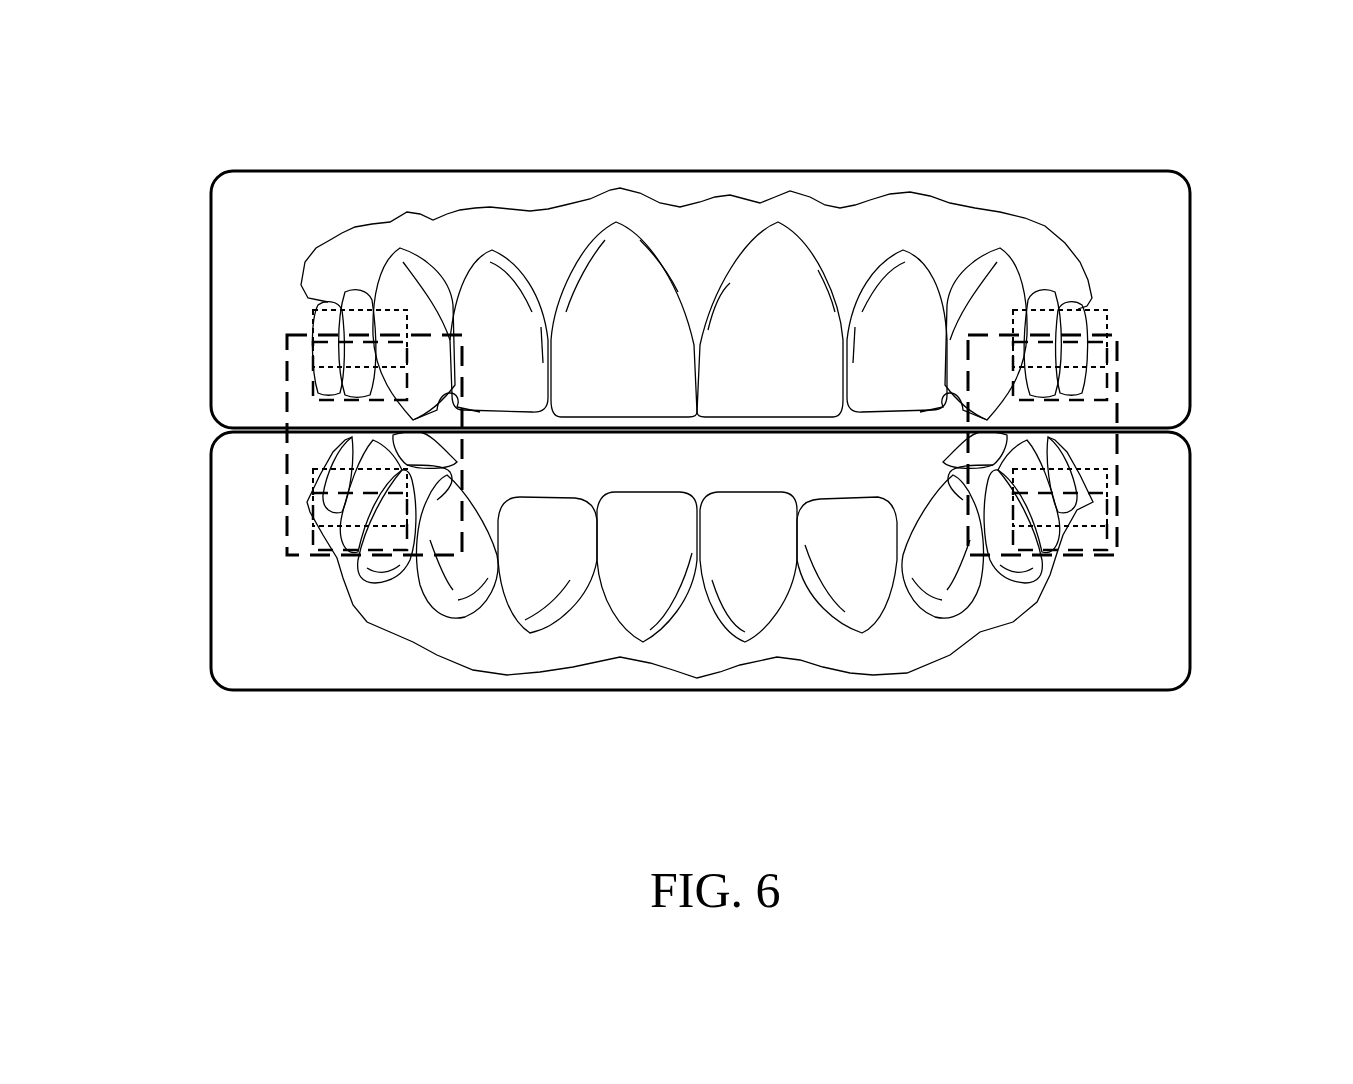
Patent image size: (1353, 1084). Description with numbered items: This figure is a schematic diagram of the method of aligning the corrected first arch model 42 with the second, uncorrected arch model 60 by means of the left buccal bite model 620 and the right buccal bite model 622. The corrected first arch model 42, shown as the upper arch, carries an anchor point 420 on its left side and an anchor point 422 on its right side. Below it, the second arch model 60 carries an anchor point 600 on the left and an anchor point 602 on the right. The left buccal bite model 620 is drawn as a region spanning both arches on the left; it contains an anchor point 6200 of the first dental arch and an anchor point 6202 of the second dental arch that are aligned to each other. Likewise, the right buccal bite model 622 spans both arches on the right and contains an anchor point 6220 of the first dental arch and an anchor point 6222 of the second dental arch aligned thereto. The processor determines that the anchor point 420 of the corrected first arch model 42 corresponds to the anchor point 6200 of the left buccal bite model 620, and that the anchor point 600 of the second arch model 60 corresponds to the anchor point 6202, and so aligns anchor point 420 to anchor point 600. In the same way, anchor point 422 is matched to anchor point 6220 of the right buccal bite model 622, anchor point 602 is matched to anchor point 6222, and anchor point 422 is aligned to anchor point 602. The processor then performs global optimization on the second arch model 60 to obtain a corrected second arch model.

The corrected first arch model 42 is at (1078, 172).
The anchor point 420 is at (360, 308).
The anchor point 422 is at (1108, 318).
The second arch model 60 is at (1092, 690).
The anchor point 600 is at (312, 482).
The anchor point 602 is at (1118, 486).
The left buccal bite model 620 is at (287, 446).
The right buccal bite model 622 is at (1118, 444).
The anchor point 6200 is at (312, 388).
The anchor point 6220 is at (1118, 378).
The anchor point 6202 is at (312, 542).
The anchor point 6222 is at (1117, 544).